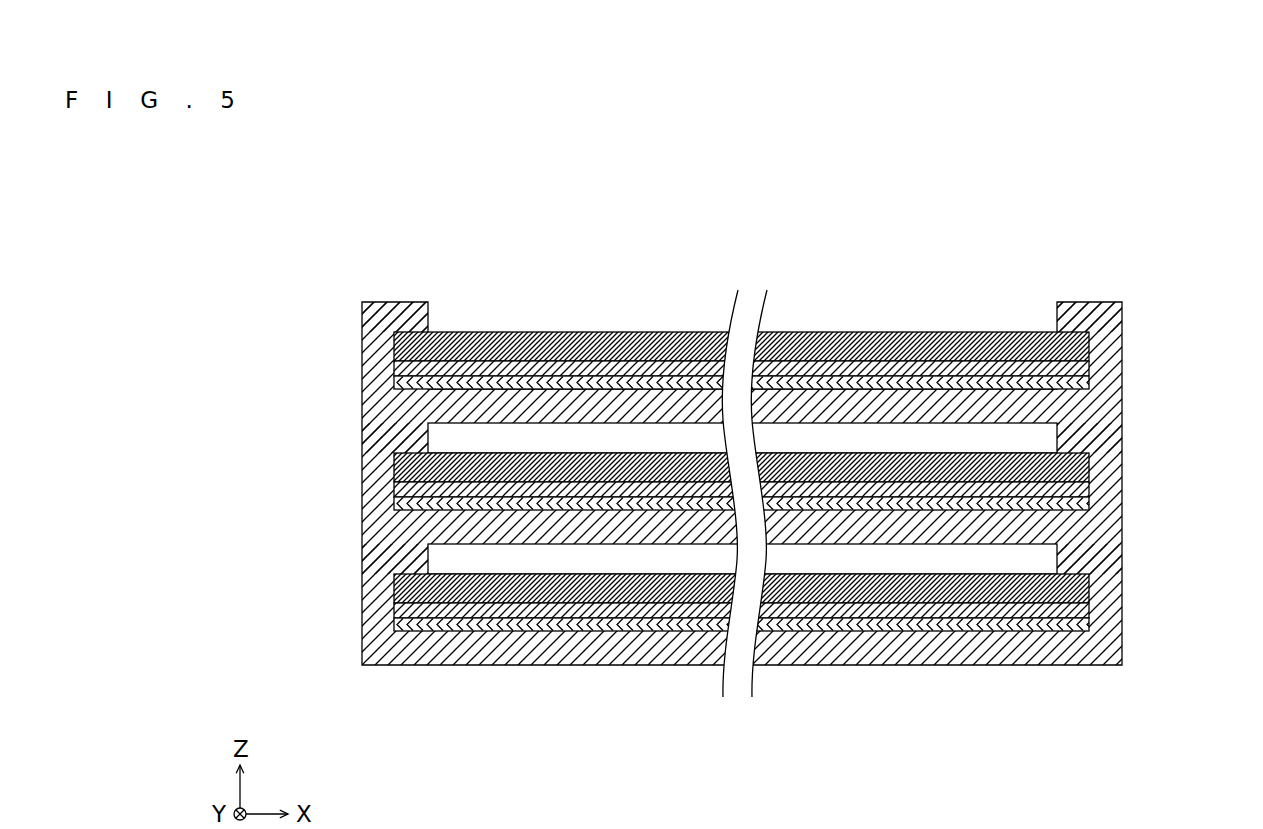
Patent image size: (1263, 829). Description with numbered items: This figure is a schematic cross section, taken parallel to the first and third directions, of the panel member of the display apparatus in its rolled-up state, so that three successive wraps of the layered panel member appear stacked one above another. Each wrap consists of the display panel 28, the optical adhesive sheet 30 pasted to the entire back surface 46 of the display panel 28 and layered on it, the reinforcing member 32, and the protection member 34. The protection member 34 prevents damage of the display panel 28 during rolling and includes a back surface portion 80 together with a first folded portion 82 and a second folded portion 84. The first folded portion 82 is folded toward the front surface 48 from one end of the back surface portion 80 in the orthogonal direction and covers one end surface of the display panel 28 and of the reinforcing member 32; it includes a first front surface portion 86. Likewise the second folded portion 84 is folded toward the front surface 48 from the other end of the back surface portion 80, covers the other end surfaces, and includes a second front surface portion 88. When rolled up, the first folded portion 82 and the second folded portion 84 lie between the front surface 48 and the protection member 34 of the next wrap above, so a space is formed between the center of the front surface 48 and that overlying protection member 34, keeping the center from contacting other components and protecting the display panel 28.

The display panel 28 is at (628, 345).
The optical adhesive sheet 30 is at (396, 369).
The reinforcing member 32 is at (395, 383).
The protection member 34 is at (1130, 380).
The back surface 46 is at (921, 401).
The front surface 48 is at (873, 345).
The back surface portion 80 is at (658, 406).
The first folded portion 82 is at (360, 346).
The second folded portion 84 is at (1124, 347).
The first front surface portion 86 is at (428, 319).
The second front surface portion 88 is at (1057, 319).